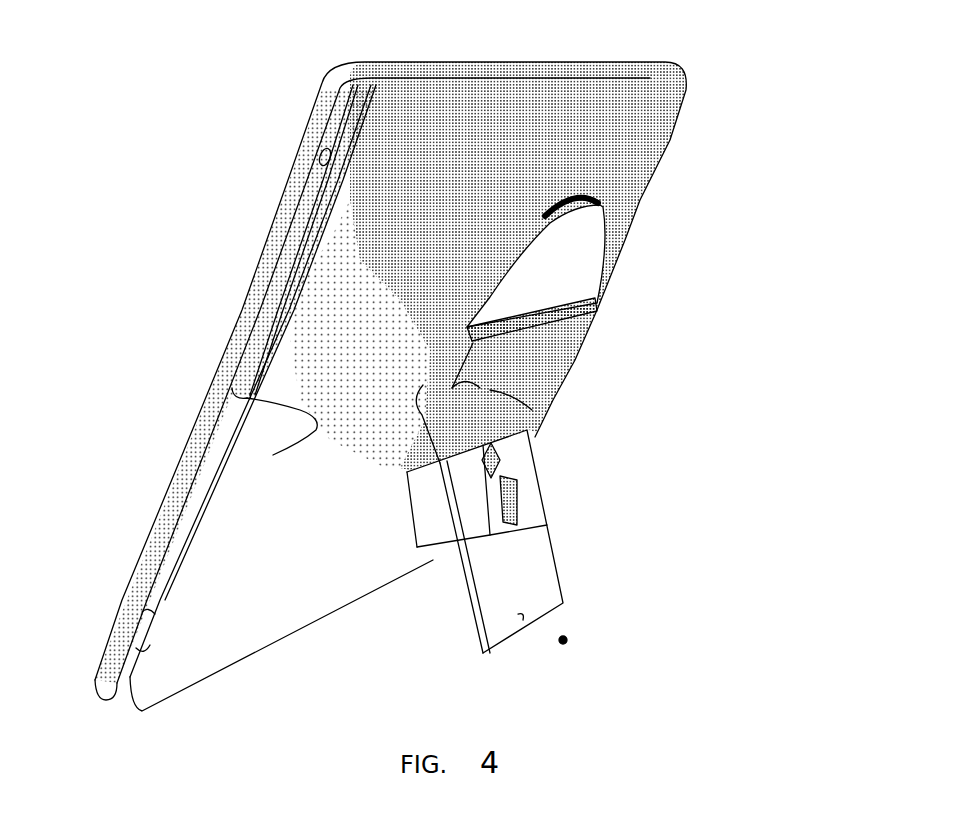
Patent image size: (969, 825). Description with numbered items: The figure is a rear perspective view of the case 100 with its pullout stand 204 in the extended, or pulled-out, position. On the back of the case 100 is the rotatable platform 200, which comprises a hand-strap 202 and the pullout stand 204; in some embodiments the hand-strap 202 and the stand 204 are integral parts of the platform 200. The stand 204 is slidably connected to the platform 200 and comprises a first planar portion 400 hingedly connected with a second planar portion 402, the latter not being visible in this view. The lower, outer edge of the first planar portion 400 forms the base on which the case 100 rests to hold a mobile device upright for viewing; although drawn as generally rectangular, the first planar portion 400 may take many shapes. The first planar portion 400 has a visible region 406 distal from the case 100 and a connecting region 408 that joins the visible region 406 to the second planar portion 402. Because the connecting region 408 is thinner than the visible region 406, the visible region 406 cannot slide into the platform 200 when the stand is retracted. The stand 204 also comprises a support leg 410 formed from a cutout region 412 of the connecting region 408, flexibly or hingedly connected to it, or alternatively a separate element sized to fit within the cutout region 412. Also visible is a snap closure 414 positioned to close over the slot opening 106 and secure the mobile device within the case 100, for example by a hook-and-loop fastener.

The case 100 is at (650, 117).
The slot opening 106 is at (337, 115).
The rotatable platform 200 is at (600, 265).
The hand-strap 202 is at (547, 396).
The pullout stand 204 is at (540, 596).
The first planar portion 400 is at (555, 575).
The second planar portion 402 is at (545, 435).
The visible region 406 is at (500, 608).
The connecting region 408 is at (457, 553).
The support leg 410 is at (435, 556).
The cutout region 412 is at (503, 510).
The snap closure 414 is at (220, 417).